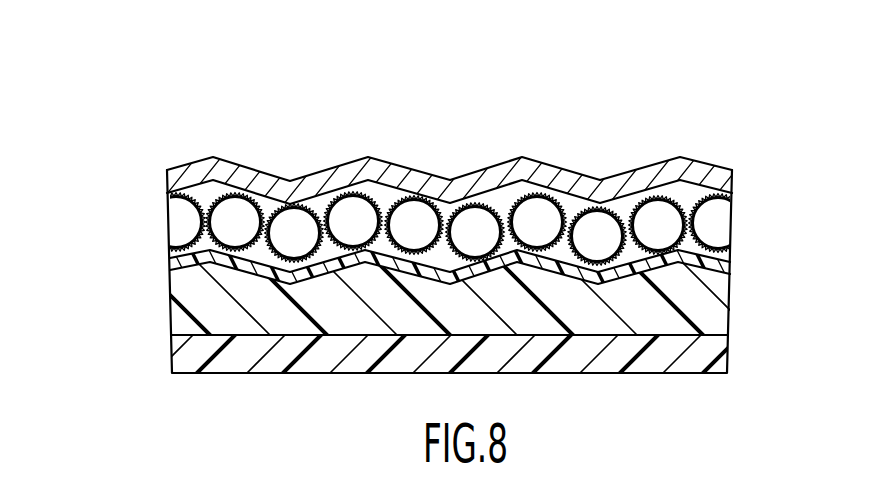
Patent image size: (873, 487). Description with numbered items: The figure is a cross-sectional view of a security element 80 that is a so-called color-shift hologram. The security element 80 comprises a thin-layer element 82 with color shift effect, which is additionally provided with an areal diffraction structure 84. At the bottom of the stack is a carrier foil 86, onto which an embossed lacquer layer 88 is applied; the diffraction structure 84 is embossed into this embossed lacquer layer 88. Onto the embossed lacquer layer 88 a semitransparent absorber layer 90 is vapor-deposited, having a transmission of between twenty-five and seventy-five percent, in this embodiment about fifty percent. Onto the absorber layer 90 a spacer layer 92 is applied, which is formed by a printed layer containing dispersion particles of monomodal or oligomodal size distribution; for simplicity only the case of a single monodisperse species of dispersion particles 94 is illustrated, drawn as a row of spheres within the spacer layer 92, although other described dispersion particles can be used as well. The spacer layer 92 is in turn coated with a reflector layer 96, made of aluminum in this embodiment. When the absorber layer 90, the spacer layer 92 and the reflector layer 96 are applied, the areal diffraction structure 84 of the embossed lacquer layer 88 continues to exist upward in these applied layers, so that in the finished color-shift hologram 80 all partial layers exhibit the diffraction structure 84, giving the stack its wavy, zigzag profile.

The security element 80 is at (196, 136).
The thin-layer element 82 is at (78, 155).
The areal diffraction structure 84 is at (438, 257).
The carrier foil 86 is at (177, 357).
The embossed lacquer layer 88 is at (175, 293).
The semitransparent absorber layer 90 is at (172, 257).
The spacer layer 92 is at (167, 212).
The dispersion particles 94 is at (538, 222).
The reflector layer 96 is at (167, 173).